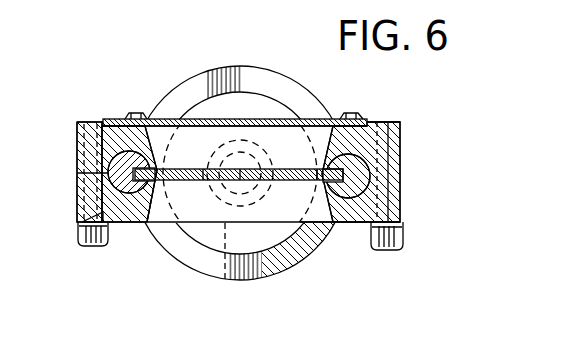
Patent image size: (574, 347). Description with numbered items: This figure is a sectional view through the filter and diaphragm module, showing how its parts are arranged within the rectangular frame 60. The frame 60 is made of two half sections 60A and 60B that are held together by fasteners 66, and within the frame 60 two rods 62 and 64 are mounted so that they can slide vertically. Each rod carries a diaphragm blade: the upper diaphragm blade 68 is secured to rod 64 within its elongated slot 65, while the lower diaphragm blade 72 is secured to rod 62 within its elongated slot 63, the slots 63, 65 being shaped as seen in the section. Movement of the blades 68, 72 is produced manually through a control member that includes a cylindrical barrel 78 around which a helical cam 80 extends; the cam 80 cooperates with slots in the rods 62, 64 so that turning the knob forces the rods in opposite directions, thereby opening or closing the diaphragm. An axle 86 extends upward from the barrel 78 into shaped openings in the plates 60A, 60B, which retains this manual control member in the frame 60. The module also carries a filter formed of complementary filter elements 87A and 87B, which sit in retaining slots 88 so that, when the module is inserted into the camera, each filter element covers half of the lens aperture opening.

The rectangular frame 60 is at (432, 178).
The half section 60A is at (356, 227).
The half section 60B is at (368, 119).
The rod 62 is at (355, 157).
The elongated slot 63 is at (328, 177).
The rod 64 is at (82, 190).
The elongated slot 65 is at (148, 223).
The fasteners 66 is at (78, 233).
The upper diaphragm blade 68 is at (166, 180).
The lower diaphragm blade 72 is at (200, 160).
The cylindrical barrel 78 is at (263, 266).
The helical cam 80 is at (183, 96).
The axle 86 is at (217, 283).
The filter element 87A is at (277, 119).
The filter element 87B is at (222, 119).
The retaining slots 88 is at (140, 117).